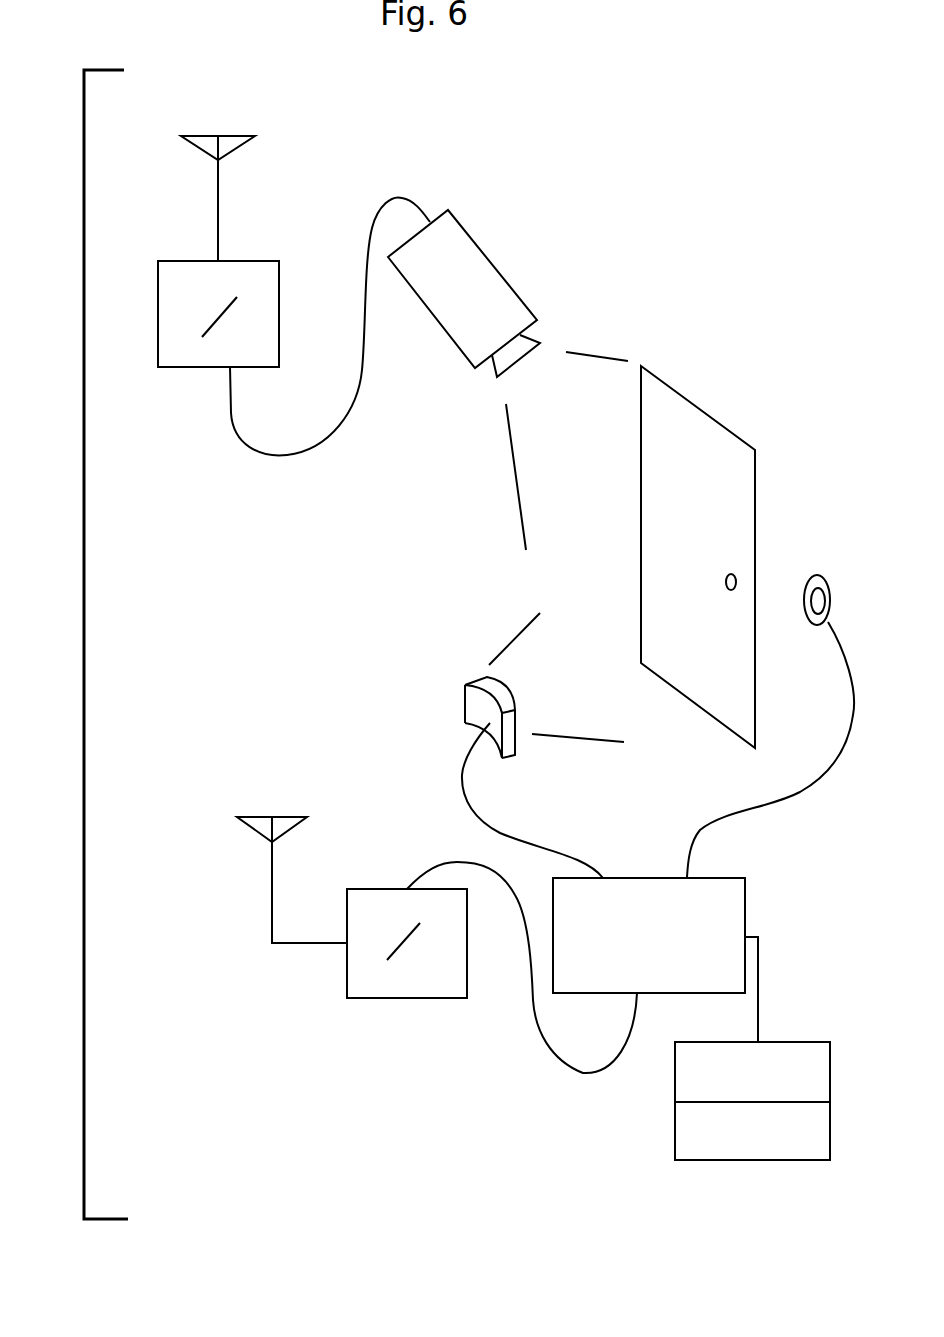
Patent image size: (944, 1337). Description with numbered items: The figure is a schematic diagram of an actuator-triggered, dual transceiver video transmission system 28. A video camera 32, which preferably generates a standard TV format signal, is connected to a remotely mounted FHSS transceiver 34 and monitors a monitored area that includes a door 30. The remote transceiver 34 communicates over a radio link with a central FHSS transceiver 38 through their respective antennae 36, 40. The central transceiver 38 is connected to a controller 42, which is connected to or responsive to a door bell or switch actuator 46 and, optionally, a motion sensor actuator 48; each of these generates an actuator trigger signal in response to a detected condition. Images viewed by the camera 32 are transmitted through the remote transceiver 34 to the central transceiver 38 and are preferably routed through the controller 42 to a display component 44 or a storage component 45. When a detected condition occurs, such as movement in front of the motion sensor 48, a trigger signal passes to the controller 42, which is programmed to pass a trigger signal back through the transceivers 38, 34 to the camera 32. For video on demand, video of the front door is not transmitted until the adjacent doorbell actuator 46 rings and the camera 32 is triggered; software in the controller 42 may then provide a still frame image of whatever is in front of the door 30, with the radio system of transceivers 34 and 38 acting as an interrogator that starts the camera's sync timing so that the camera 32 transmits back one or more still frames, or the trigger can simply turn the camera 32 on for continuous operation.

The system 28 is at (84, 643).
The door 30 is at (700, 393).
The video camera 32 is at (493, 256).
The remotely mounted FHSS transceiver 34 is at (158, 342).
The antenna 36 is at (224, 131).
The central FHSS transceiver 38 is at (338, 973).
The antenna 40 is at (253, 863).
The controller 42 is at (730, 891).
The display component 44 is at (783, 1042).
The storage component 45 is at (675, 1138).
The door bell or switch actuator 46 is at (798, 578).
The motion sensor actuator 48 is at (470, 664).